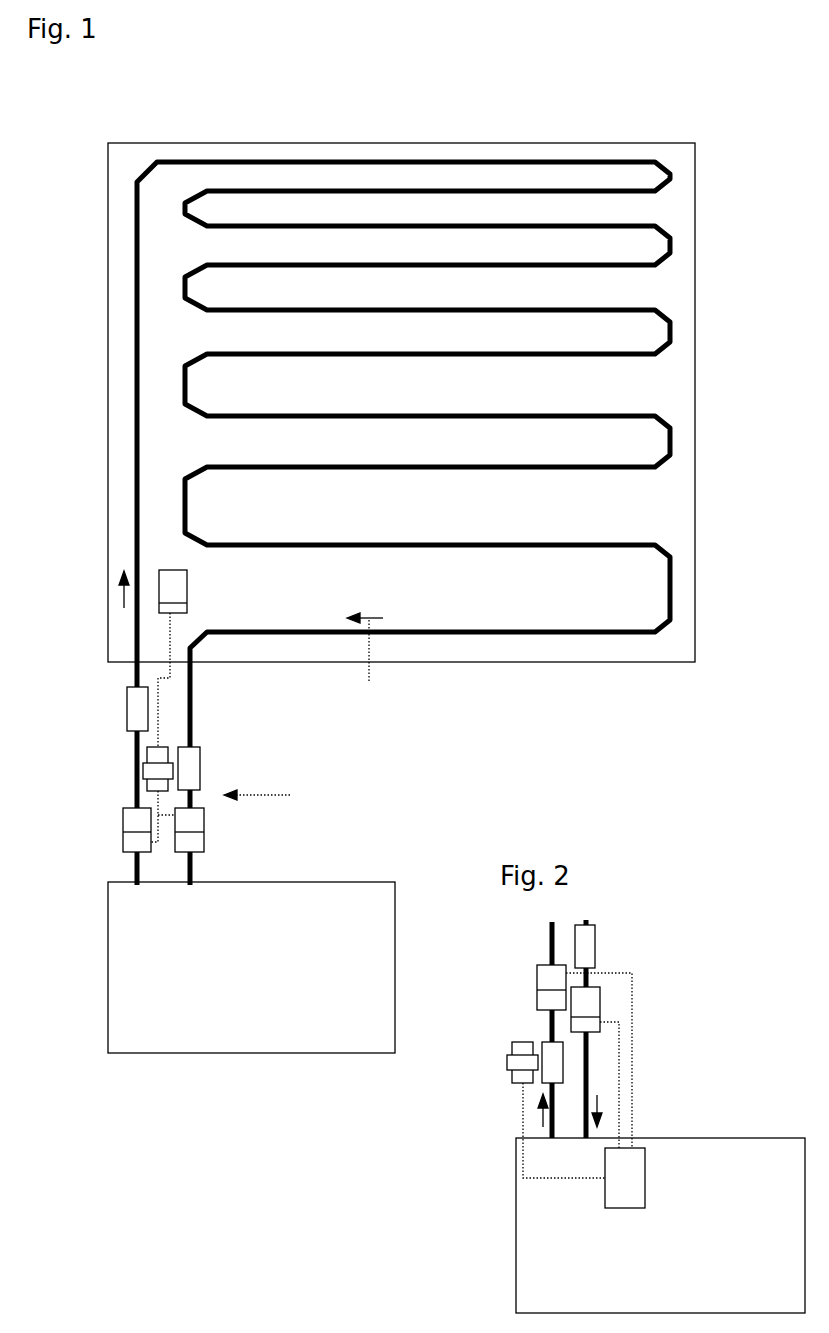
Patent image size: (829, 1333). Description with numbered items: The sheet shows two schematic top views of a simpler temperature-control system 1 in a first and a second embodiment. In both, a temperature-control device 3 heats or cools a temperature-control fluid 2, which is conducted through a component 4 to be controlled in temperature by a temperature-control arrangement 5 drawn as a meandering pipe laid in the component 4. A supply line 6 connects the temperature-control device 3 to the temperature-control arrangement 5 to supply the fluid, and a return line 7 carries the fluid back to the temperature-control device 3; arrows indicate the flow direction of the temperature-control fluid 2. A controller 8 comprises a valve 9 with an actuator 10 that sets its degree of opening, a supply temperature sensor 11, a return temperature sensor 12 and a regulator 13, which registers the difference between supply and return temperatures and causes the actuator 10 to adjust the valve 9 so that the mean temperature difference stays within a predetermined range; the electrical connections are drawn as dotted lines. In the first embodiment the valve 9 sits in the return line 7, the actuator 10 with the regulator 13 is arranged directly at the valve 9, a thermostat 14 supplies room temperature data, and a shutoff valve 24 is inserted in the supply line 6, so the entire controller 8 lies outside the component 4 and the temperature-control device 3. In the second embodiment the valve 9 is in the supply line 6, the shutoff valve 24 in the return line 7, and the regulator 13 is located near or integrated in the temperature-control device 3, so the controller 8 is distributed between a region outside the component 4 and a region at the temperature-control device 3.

In FIG. 1, the temperature-control system 1 is at (545, 714).
In FIG. 1, the temperature-control fluid 2 is at (120, 593).
In FIG. 2, the temperature-control fluid 2 is at (540, 1113).
In FIG. 1, the temperature-control device 3 is at (309, 938).
In FIG. 2, the temperature-control device 3 is at (749, 1195).
In FIG. 1, the component 4 is at (173, 348).
In FIG. 1, the temperature-control arrangement 5 is at (139, 440).
In FIG. 1, the supply line 6 is at (135, 672).
In FIG. 2, the supply line 6 is at (550, 930).
In FIG. 1, the return line 7 is at (192, 670).
In FIG. 2, the return line 7 is at (588, 1082).
In FIG. 1, the controller 8 is at (265, 796).
In FIG. 2, the controller 8 is at (672, 1047).
In FIG. 1, the valve 9 is at (195, 779).
In FIG. 2, the valve 9 is at (559, 1071).
In FIG. 1, the actuator 10 is at (143, 770).
In FIG. 2, the actuator 10 is at (518, 1062).
In FIG. 1, the supply temperature sensor 11 is at (150, 831).
In FIG. 2, the supply temperature sensor 11 is at (564, 989).
In FIG. 1, the return temperature sensor 12 is at (203, 831).
In FIG. 2, the return temperature sensor 12 is at (598, 1016).
In FIG. 1, the regulator 13 is at (156, 757).
In FIG. 2, the regulator 13 is at (638, 1193).
In FIG. 1, the thermostat 14 is at (186, 601).
In FIG. 1, the shutoff valve 24 is at (133, 708).
In FIG. 2, the shutoff valve 24 is at (585, 948).